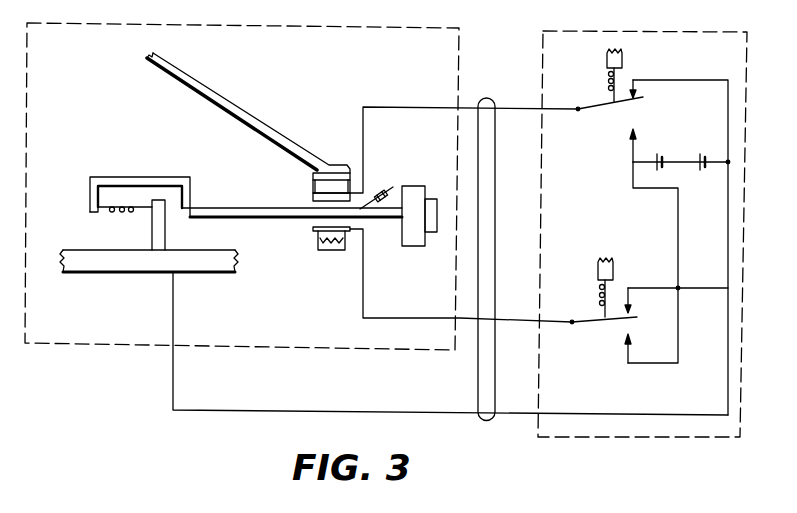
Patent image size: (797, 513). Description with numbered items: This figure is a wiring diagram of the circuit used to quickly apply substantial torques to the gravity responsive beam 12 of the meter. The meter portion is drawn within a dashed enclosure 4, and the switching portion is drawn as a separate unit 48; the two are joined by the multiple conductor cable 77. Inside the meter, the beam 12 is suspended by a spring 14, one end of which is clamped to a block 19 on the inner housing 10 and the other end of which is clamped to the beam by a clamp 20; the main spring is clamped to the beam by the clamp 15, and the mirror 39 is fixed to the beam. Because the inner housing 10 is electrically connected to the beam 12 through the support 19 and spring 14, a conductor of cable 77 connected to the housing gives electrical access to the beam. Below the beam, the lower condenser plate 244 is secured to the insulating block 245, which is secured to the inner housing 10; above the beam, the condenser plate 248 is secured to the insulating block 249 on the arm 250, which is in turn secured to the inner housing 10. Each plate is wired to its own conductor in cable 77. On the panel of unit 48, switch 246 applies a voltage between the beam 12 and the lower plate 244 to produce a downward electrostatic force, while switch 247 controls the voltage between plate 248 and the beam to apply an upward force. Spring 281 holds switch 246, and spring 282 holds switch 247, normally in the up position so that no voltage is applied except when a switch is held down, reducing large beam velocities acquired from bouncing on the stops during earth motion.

The switching mechanism assembly 4 is at (269, 28).
The unit 48 is at (656, 33).
The arm 250 is at (228, 97).
The insulating block 249 is at (313, 183).
The condenser plate 248 is at (313, 200).
The gravity responsive beam 12 is at (221, 206).
The clamp 20 is at (90, 206).
The spring 14 is at (122, 214).
The block 19 is at (160, 235).
The inner housing 10 is at (103, 268).
The lower condenser plate 244 is at (313, 229).
The insulating block 245 is at (320, 246).
The clamp 15 is at (386, 191).
The mirror 39 is at (431, 200).
The spring 282 is at (608, 81).
The switch 247 is at (630, 113).
The spring 281 is at (600, 301).
The switch 246 is at (627, 325).
The multiple conductor cable 77 is at (487, 421).